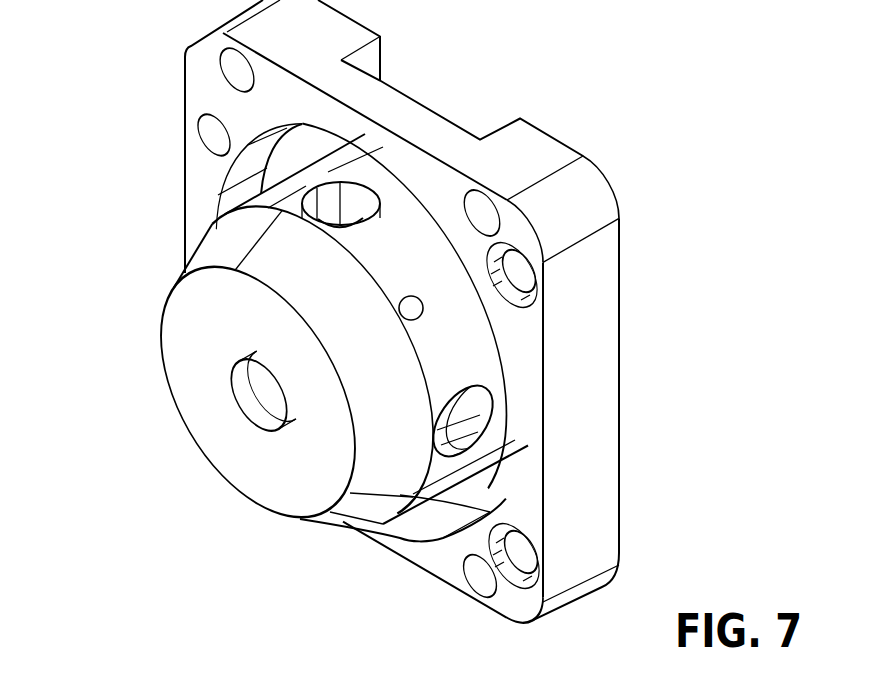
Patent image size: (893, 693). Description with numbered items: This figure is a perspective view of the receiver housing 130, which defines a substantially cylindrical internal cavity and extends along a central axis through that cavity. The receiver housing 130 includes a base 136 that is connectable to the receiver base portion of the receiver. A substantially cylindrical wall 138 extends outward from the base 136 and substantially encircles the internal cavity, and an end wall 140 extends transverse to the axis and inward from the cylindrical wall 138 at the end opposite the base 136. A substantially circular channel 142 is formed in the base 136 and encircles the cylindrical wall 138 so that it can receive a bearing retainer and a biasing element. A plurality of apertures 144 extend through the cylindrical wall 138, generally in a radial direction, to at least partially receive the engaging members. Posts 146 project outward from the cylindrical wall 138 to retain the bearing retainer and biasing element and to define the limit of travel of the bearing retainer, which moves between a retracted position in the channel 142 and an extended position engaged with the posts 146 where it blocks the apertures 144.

The receiver housing 130 is at (124, 138).
The base 136 is at (600, 430).
The cylindrical wall 138 is at (394, 190).
The end wall 140 is at (228, 455).
The channel 142 is at (415, 523).
The apertures 144 is at (478, 414).
The posts 146 is at (419, 320).